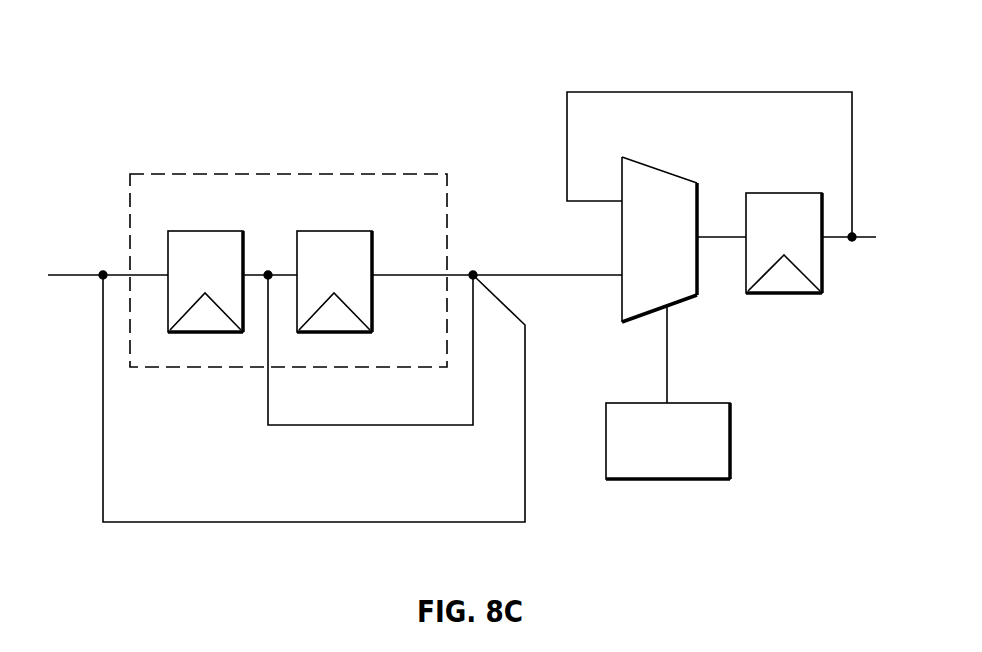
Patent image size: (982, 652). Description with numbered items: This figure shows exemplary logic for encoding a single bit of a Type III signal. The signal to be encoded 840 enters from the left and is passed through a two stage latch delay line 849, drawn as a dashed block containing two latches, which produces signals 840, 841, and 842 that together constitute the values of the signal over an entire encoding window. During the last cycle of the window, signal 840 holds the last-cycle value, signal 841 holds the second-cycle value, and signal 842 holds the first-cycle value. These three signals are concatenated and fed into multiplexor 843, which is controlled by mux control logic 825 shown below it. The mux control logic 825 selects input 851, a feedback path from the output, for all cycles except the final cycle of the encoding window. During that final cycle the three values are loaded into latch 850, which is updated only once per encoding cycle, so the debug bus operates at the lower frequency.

The Type III signal to be encoded 840 is at (68, 275).
The signal 841 is at (331, 425).
The signal 842 is at (390, 275).
The multiplexor 843 is at (687, 183).
The two stage latch delay line 849 is at (285, 174).
The latch 850 is at (765, 193).
The input 851 is at (757, 92).
The mux control logic 825 is at (730, 433).